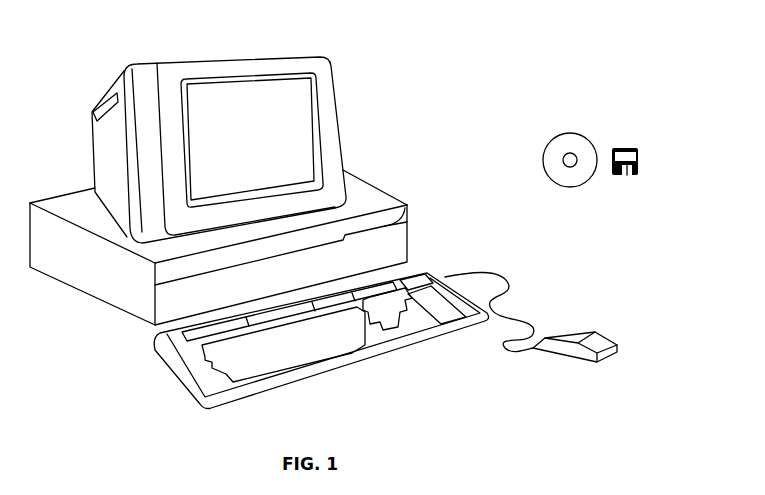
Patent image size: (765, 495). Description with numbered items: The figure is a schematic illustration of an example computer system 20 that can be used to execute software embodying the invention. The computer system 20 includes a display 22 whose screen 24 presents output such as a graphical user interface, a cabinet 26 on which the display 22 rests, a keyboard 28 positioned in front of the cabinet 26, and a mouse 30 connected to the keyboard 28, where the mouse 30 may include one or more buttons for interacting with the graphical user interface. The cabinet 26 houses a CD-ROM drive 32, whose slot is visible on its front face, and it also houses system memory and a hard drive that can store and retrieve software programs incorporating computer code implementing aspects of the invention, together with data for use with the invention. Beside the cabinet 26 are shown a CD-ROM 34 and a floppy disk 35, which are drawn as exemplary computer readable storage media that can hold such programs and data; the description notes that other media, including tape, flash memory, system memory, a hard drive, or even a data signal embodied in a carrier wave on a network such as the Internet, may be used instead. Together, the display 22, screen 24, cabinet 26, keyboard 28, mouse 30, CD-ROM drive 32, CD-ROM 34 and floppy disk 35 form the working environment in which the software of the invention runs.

The computer system 20 is at (503, 38).
The display 22 is at (340, 147).
The screen 24 is at (313, 98).
The cabinet 26 is at (127, 312).
The keyboard 28 is at (327, 373).
The mouse 30 is at (612, 338).
The CD-ROM drive 32 is at (406, 204).
The CD-ROM 34 is at (567, 131).
The floppy disk 35 is at (625, 148).